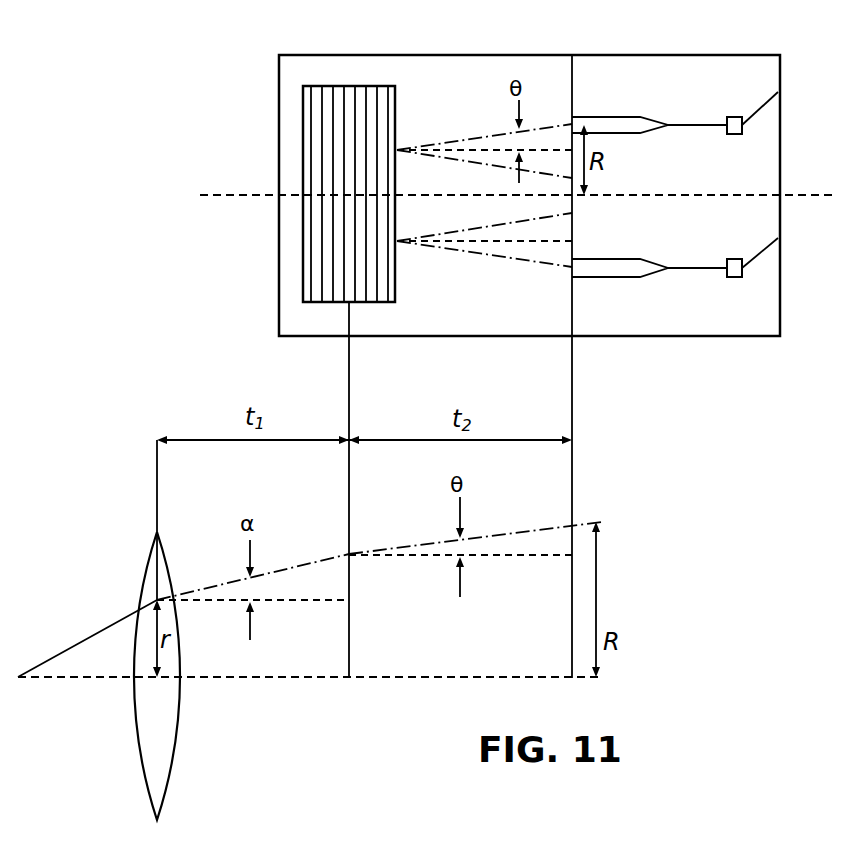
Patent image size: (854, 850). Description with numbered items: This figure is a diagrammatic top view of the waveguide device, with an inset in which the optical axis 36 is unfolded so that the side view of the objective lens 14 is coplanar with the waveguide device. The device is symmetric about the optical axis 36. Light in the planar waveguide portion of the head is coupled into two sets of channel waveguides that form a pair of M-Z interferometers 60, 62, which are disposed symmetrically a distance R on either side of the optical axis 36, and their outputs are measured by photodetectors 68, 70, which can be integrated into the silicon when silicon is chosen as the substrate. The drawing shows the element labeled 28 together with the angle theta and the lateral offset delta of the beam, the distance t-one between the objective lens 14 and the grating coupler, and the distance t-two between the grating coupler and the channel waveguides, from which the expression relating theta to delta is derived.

The objective lens 14 is at (176, 717).
The fiber optic bundle / scrambler 28 is at (304, 176).
The optical axis 36 is at (241, 196).
The M-Z interferometer 60 is at (606, 113).
The M-Z interferometer 62 is at (622, 286).
The photodetector 68 is at (778, 92).
The photodetector 70 is at (778, 238).